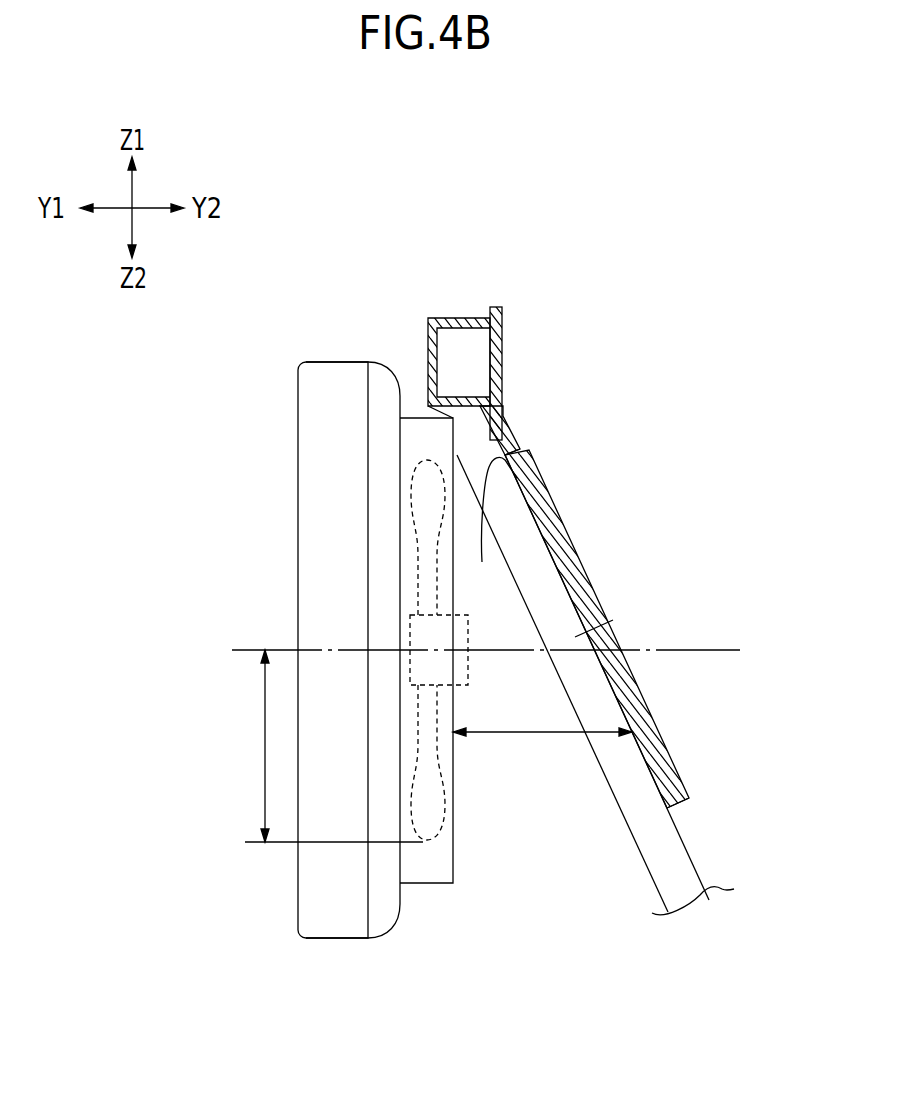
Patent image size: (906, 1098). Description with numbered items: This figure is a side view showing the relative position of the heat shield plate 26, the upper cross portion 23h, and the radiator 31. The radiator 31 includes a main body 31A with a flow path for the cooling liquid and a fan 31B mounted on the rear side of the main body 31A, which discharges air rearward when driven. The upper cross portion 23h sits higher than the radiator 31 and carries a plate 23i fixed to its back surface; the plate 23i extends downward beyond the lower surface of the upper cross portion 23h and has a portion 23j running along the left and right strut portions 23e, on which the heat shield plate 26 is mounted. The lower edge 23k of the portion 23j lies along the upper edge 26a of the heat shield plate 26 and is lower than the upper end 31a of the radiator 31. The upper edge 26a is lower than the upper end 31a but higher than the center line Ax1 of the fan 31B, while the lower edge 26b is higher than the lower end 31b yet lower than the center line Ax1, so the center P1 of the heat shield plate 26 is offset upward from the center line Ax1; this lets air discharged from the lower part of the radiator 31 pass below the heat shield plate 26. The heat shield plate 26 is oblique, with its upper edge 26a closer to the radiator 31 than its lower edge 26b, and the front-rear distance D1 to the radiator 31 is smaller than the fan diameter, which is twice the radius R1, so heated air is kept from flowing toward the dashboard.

The radiator 31 is at (284, 650).
The main body 31A is at (318, 486).
The fan 31B is at (410, 540).
The upper end 31a is at (334, 362).
The lower end 31b is at (327, 940).
The upper cross portion 23h is at (462, 318).
The plate 23i is at (503, 342).
The portion 23j is at (494, 430).
The lower edge 23k is at (508, 452).
The strut portion 23e is at (648, 838).
The heat shield plate 26 is at (638, 688).
The upper edge 26a is at (488, 527).
The lower edge 26b is at (690, 804).
The center line Ax1 is at (457, 651).
The radius R1 is at (325, 746).
The distance D1 is at (542, 751).
The center P1 is at (616, 614).